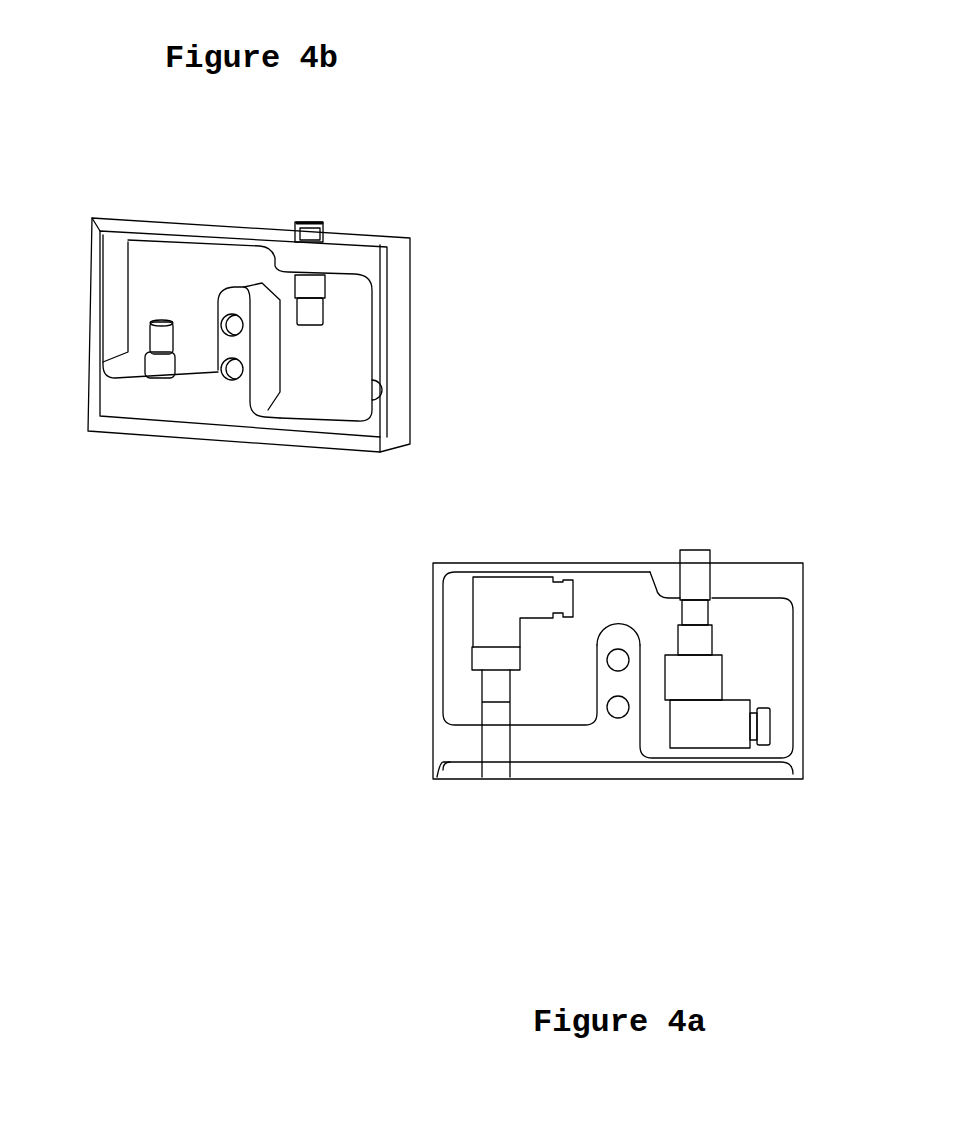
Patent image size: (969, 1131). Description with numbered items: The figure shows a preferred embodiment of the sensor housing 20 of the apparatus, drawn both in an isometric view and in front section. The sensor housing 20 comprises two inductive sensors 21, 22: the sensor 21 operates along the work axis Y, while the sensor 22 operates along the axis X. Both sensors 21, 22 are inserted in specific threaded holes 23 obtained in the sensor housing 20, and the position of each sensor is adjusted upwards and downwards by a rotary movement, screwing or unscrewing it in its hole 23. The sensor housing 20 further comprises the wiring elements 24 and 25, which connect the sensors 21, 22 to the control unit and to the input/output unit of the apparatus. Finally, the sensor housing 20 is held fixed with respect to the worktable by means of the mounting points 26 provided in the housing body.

In FIG. 4A, the sensor housing 20 is at (423, 329).
In FIG. 4B, the sensor housing 20 is at (249, 335).
In FIG. 4A, the inductive sensor 21 is at (488, 693).
In FIG. 4B, the inductive sensor 21 is at (148, 340).
In FIG. 4A, the inductive sensor 22 is at (700, 622).
In FIG. 4B, the inductive sensor 22 is at (308, 300).
In FIG. 4A, the holes 23 is at (697, 580).
In FIG. 4B, the holes 23 is at (305, 255).
In FIG. 4A, the wiring element 24 is at (537, 618).
In FIG. 4A, the wiring element 25 is at (715, 748).
In FIG. 4A, the mounting points 26 is at (620, 712).
In FIG. 4B, the mounting points 26 is at (232, 380).